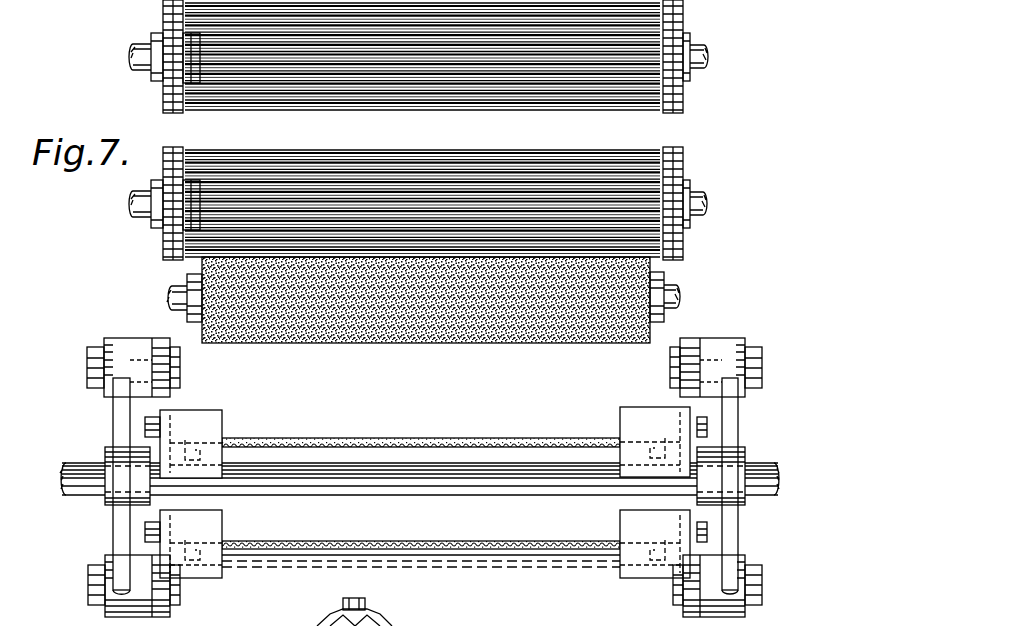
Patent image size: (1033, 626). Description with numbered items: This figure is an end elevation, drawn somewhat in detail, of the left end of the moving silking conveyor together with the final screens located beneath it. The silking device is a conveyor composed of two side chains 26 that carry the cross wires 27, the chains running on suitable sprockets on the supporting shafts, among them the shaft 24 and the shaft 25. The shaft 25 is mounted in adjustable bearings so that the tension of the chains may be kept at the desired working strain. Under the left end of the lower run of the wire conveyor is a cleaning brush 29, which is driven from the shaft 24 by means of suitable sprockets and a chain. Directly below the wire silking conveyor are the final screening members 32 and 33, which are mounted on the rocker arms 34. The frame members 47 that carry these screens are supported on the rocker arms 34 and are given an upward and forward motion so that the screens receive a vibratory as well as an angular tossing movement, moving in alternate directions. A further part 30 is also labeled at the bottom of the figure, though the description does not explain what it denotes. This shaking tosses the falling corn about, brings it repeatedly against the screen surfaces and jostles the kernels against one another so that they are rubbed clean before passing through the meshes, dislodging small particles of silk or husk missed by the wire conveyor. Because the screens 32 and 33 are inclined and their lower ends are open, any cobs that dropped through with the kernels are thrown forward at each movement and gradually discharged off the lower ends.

The shaft 24 is at (707, 197).
The shaft 25 is at (708, 58).
The side chains 26 is at (677, 150).
The cross wires 27 is at (478, 98).
The cleaning brush 29 is at (447, 328).
The base support 30 is at (328, 612).
The final screening member 32 is at (424, 418).
The final screening member 33 is at (400, 523).
The rocker arms 34 is at (122, 420).
The frame members 47 is at (172, 420).